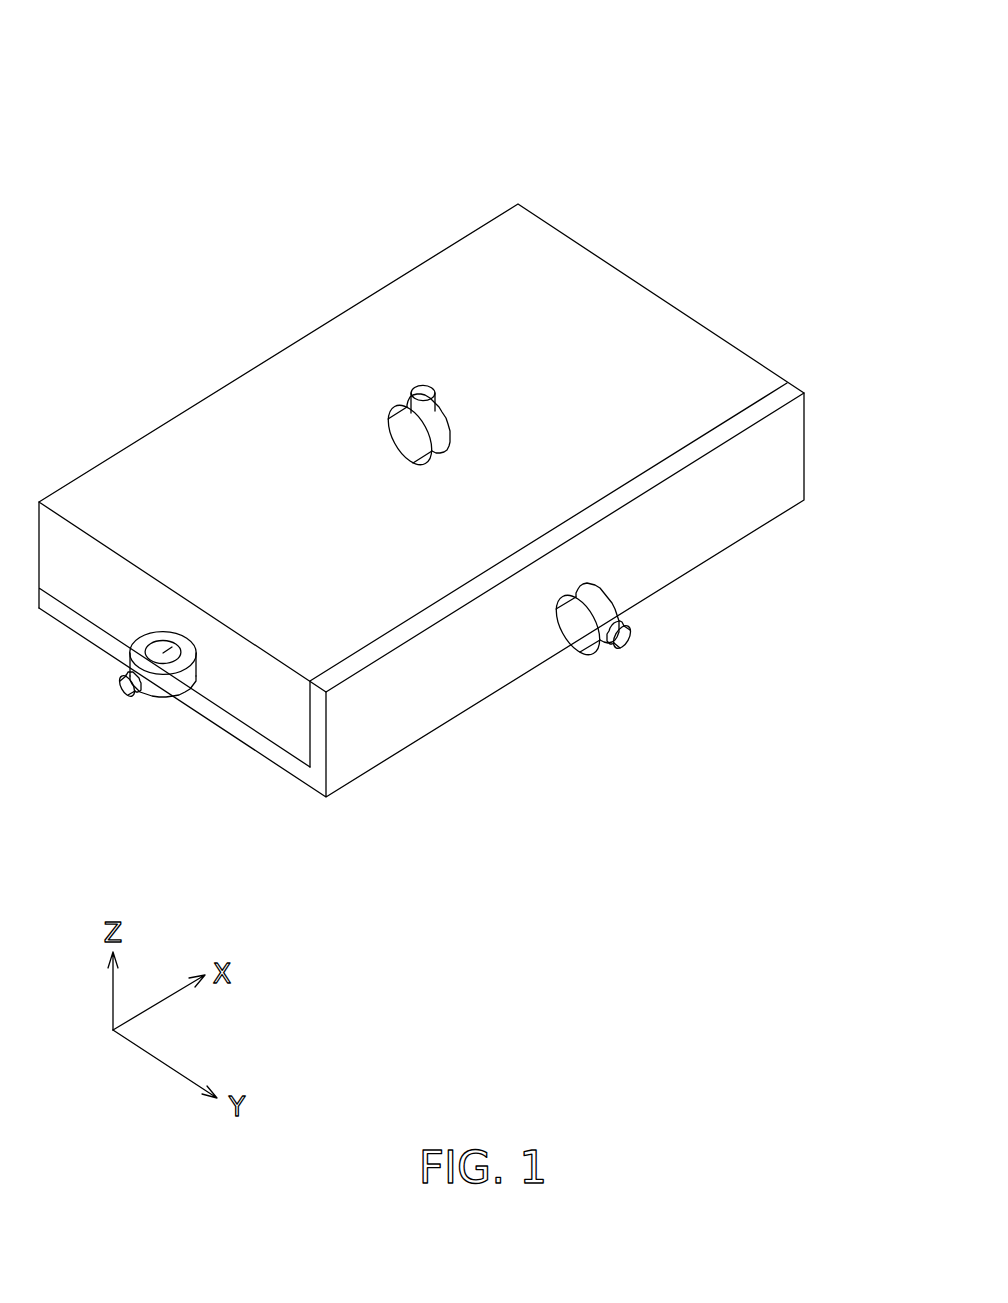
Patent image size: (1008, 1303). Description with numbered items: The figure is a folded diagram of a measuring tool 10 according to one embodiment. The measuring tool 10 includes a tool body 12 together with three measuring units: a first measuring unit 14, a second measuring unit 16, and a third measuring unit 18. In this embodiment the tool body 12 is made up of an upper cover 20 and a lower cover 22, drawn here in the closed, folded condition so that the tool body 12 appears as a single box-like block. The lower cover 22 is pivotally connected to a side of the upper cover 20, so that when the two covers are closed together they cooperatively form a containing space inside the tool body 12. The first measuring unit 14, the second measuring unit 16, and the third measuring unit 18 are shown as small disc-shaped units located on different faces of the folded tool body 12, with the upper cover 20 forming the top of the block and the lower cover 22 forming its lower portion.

The measuring tool 10 is at (164, 85).
The tool body 12 is at (877, 202).
The first measuring unit 14 is at (153, 686).
The second measuring unit 16 is at (587, 648).
The third measuring unit 18 is at (395, 423).
The upper cover 20 is at (687, 337).
The lower cover 22 is at (803, 433).